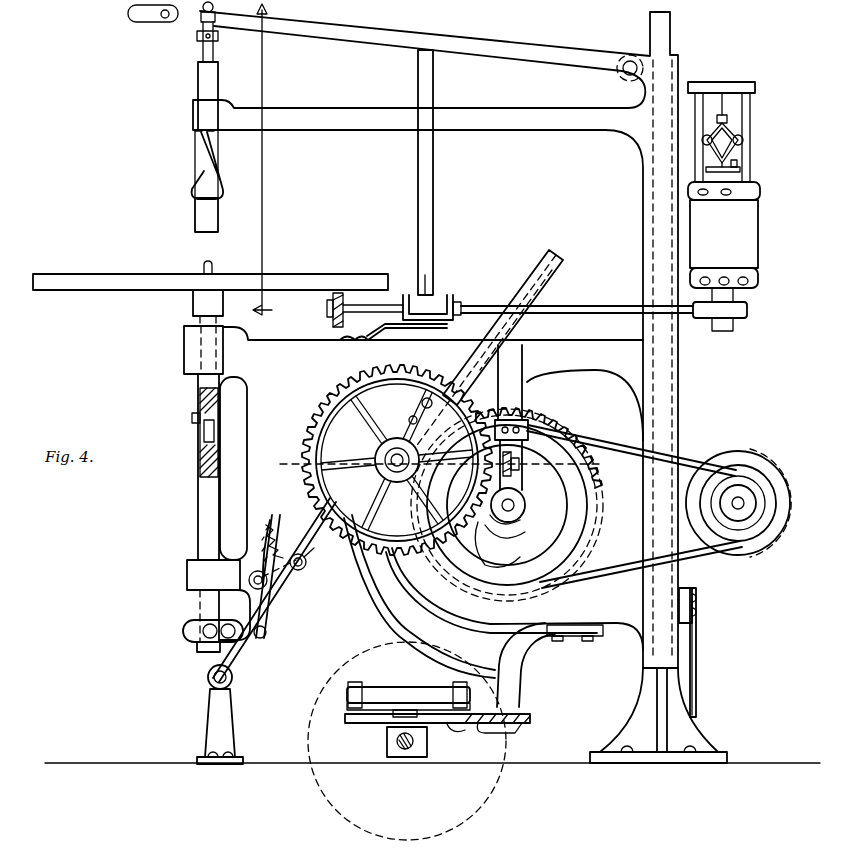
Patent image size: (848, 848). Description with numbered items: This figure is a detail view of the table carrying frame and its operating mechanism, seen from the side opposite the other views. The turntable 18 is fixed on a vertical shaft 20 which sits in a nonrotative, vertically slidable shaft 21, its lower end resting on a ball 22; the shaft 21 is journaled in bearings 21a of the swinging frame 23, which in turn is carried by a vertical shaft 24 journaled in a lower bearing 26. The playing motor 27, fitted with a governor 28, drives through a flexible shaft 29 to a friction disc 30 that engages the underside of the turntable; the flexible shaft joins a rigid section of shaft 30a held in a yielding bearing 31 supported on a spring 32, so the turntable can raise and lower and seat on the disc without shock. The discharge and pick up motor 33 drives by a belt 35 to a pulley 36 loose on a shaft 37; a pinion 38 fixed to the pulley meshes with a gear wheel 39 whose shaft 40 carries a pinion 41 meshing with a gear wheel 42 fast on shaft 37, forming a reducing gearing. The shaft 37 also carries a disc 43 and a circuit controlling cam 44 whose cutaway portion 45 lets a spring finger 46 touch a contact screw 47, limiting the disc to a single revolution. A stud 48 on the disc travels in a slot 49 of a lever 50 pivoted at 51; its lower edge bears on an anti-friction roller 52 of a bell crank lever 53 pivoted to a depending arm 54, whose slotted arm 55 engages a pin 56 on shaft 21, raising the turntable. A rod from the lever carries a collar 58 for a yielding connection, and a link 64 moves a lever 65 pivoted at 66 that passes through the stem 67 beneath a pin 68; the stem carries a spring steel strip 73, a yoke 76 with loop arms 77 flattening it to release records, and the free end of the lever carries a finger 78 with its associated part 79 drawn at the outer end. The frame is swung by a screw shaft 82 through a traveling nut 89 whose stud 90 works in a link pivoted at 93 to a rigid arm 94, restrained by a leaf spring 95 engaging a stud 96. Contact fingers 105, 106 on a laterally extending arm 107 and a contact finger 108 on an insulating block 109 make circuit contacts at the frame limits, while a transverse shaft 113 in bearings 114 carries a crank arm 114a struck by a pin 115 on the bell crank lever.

The turntable 18 is at (330, 274).
The vertical shaft 20 is at (212, 266).
The nonrotative vertically slidable shaft 21 is at (198, 522).
The bearings 21a is at (184, 357).
The ball 22 is at (198, 452).
The swinging frame 23 is at (419, 336).
The vertical shaft 24 is at (672, 37).
The lower bearing 26 is at (675, 733).
The playing motor 27 is at (750, 252).
The governor 28 is at (740, 146).
The flexible shaft 29 is at (590, 306).
The friction disc 30 is at (327, 318).
The rigid section of shaft 30a is at (440, 270).
The yielding bearing 31 is at (450, 297).
The spring 32 is at (400, 345).
The discharge and pick up motor 33 is at (772, 538).
The belt 35 is at (650, 470).
The pulley 36 is at (598, 500).
The shaft 37 is at (514, 505).
The pinion 38 is at (492, 540).
The gear wheel 39 is at (397, 560).
The shaft 40 is at (375, 452).
The pinion 41 is at (417, 420).
The gear wheel 42 is at (540, 416).
The disc 43 is at (493, 596).
The circuit controlling cam 44 is at (520, 520).
The cutaway portion 45 is at (515, 540).
The spring finger 46 is at (522, 482).
The contact screw 47 is at (503, 470).
The stud 48 is at (430, 400).
The slot 49 is at (535, 268).
The lever 50 is at (278, 514).
The pivot 51 is at (249, 580).
The anti-friction roller 52 is at (306, 566).
The bell crank lever 53 is at (284, 582).
The depending arm 54 is at (268, 628).
The slot 55 is at (197, 648).
The pin 56 is at (183, 628).
The collar 58 is at (407, 745).
The link 64 is at (433, 170).
The lever 65 is at (480, 56).
The pivot 66 is at (624, 60).
The stem 67 is at (213, 50).
The pin 68 is at (205, 22).
The spring steel strip 73 is at (218, 212).
The yoke 76 is at (218, 80).
The loop arms 77 is at (222, 188).
The finger 78 is at (140, 22).
The pin 79 is at (165, 22).
The screw shaft 82 is at (413, 741).
The traveling nut 89 is at (387, 744).
The stud 90 is at (405, 687).
The pivot 93 is at (462, 732).
The rigid arm 94 is at (522, 676).
The leaf spring 95 is at (378, 687).
The stud 96 is at (348, 690).
The contact finger 105 is at (696, 632).
The contact finger 106 is at (696, 688).
The laterally extending arm 107 is at (694, 600).
The contact finger 108 is at (500, 733).
The insulating block 109 is at (530, 719).
The transverse shaft 113 is at (210, 686).
The bearings 114 is at (219, 722).
The crank arm 114a is at (276, 606).
The pin 115 is at (312, 550).